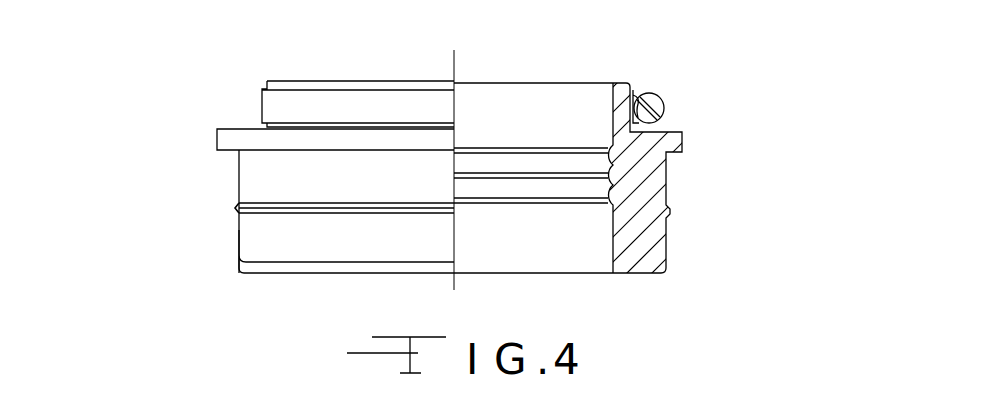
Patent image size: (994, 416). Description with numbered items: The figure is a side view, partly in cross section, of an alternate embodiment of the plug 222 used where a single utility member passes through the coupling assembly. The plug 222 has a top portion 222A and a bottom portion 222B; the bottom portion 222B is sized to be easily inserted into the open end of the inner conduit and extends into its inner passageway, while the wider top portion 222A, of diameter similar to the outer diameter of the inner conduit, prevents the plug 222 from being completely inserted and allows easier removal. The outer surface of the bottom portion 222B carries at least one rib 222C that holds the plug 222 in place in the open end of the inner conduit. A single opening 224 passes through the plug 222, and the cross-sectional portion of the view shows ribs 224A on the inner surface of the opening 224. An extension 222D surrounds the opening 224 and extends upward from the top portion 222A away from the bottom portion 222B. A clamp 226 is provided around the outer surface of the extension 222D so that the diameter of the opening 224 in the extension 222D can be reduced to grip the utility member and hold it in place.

The plug 222 is at (666, 172).
The top portion 222A is at (217, 136).
The bottom portion 222B is at (238, 246).
The rib 222C is at (234, 208).
The extension 222D is at (263, 84).
The opening 224 is at (577, 260).
The ribs 224A is at (528, 151).
The clamp 226 is at (666, 104).